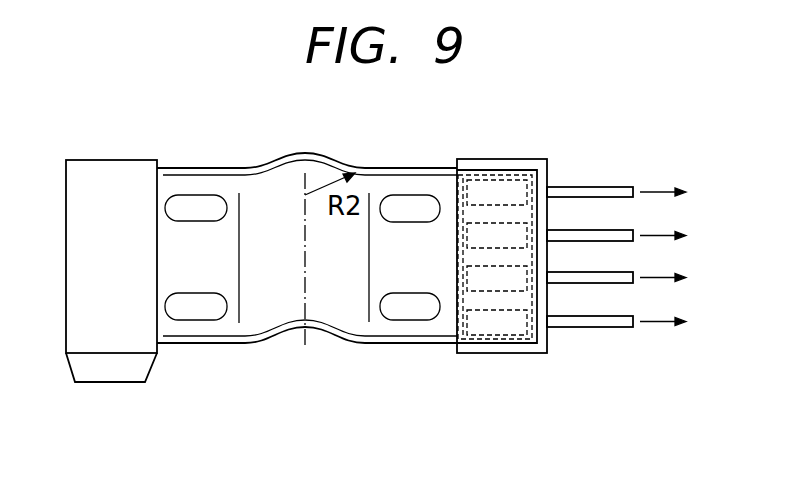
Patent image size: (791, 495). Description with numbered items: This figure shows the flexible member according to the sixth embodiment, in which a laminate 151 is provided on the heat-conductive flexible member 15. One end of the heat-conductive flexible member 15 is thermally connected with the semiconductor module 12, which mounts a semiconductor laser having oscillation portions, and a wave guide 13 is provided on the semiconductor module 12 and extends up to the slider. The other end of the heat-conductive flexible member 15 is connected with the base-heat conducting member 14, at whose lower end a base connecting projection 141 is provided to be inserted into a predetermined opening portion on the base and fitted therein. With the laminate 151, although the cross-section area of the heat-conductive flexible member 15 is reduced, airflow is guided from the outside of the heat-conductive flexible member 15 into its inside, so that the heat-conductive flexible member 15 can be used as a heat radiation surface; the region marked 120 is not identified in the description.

The base-heat conducting member 14 is at (102, 165).
The base connecting projection 141 is at (112, 365).
The heat-conductive flexible member 15 is at (318, 152).
The laminate 151 is at (197, 203).
The semiconductor module 12 is at (493, 345).
The connector contact portions 120 is at (505, 185).
The wave guide 13 is at (610, 187).